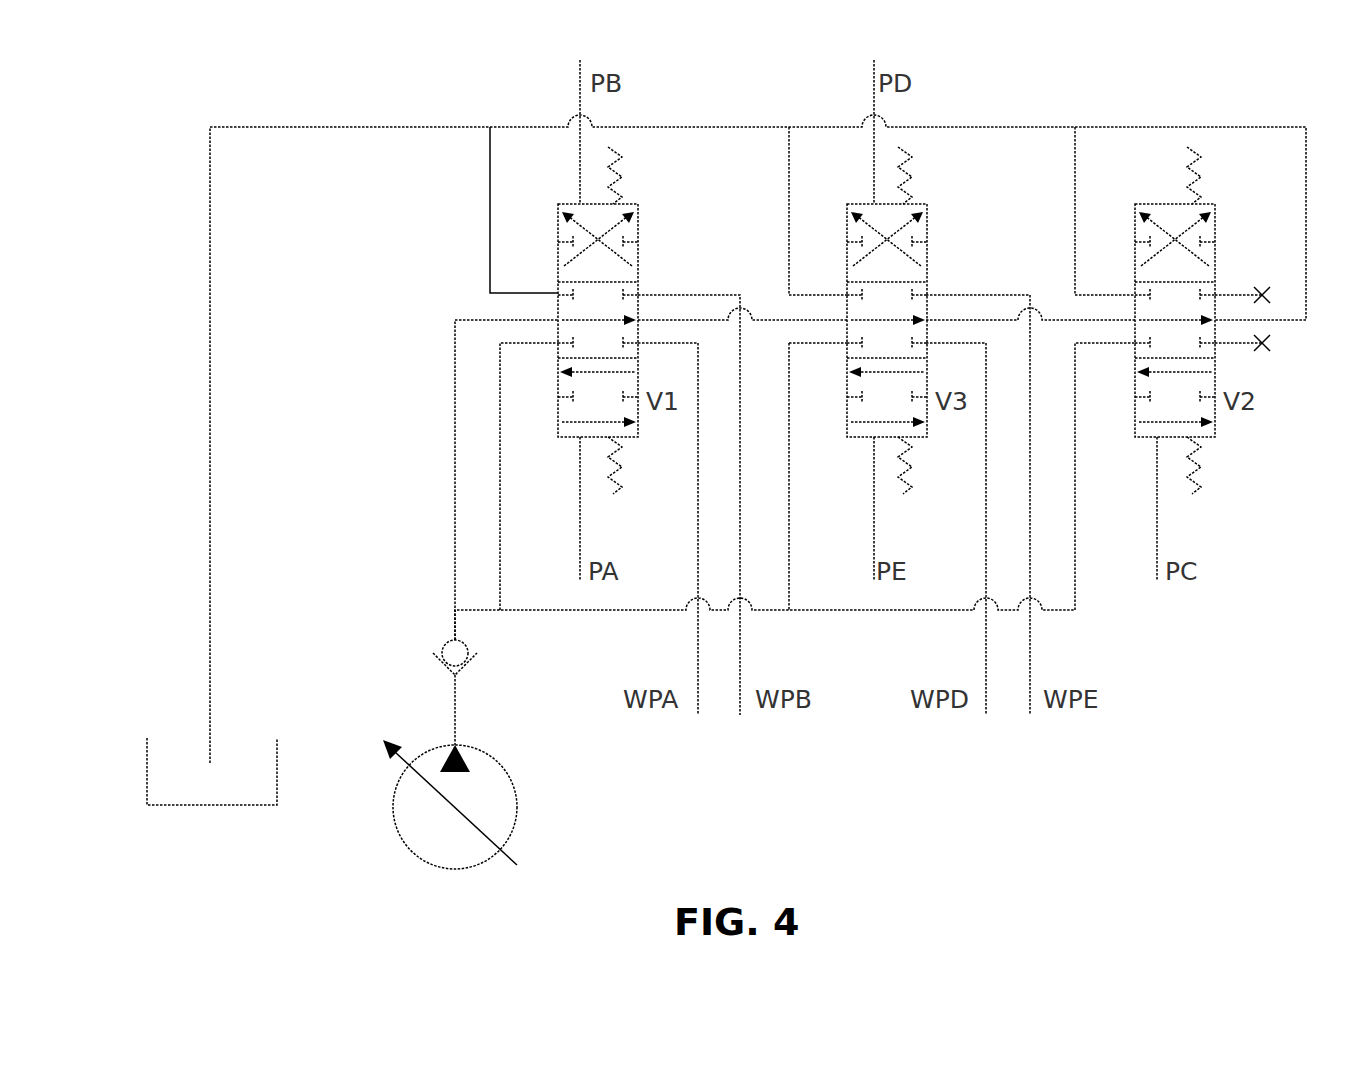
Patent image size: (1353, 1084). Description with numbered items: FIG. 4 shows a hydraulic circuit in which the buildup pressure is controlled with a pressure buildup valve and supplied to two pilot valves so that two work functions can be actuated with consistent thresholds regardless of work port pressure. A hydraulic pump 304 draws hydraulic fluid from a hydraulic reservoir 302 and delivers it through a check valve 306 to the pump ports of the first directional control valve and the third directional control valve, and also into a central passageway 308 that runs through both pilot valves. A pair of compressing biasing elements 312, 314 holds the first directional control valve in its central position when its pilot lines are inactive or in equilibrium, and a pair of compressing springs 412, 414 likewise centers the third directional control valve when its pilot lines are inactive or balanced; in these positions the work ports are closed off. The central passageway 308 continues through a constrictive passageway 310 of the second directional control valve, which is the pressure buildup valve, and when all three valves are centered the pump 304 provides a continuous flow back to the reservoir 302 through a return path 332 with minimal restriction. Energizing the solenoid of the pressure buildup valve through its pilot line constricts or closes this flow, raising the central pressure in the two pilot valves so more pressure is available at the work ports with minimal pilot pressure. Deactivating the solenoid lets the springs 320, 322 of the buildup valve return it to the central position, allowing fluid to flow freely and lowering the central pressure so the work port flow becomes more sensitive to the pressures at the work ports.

The hydraulic reservoir 302 is at (176, 766).
The hydraulic pump 304 is at (395, 808).
The check valve 306 is at (442, 650).
The central passageway 308 is at (558, 320).
The constrictive passageway 310 is at (1135, 320).
The compressing biasing element 312 is at (620, 480).
The compressing biasing element 314 is at (612, 186).
The spring of pressure buildup valve 320 is at (1192, 178).
The spring of pressure buildup valve 322 is at (1197, 475).
The return path 332 is at (210, 383).
The compressing spring 412 is at (903, 478).
The compressing spring 414 is at (905, 186).